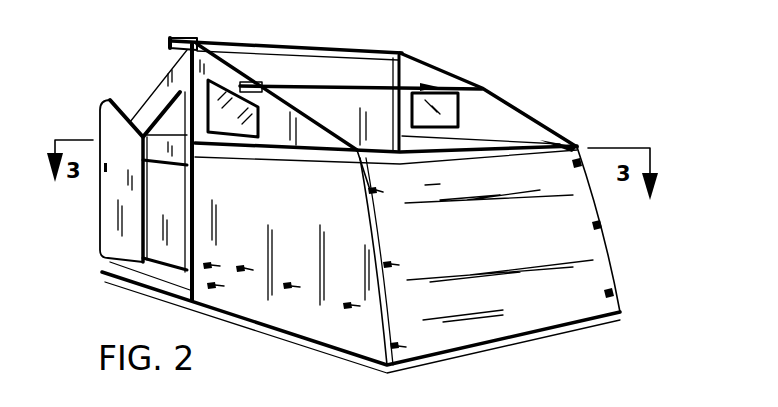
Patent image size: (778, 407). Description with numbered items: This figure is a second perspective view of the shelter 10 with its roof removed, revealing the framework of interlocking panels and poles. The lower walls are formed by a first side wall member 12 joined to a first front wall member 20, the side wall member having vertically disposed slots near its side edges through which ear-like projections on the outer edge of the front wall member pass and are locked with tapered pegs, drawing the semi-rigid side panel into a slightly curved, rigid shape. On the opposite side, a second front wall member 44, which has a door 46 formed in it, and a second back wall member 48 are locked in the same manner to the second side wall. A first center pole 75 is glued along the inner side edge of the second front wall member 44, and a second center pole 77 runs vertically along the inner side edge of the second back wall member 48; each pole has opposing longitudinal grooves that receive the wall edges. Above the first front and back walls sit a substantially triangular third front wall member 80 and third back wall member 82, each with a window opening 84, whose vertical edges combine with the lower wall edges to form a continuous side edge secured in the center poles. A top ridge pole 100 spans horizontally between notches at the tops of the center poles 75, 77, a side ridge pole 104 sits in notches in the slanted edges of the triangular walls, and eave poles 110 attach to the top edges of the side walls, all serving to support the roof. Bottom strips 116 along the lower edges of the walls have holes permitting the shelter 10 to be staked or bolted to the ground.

The shelter 10 is at (540, 78).
The first side wall member 12 is at (587, 249).
The first front wall member 20 is at (282, 317).
The second front wall member 44 is at (157, 100).
The door 46 is at (108, 205).
The second back wall member 48 is at (372, 112).
The first center pole 75 is at (194, 183).
The second center pole 77 is at (399, 61).
The third front wall member 80 is at (211, 62).
The third back wall member 82 is at (500, 116).
The window opening 84 is at (220, 95).
The top ridge pole 100 is at (370, 52).
The side ridge pole 104 is at (466, 86).
The eave poles 110 is at (558, 138).
The bottom strips 116 is at (310, 343).